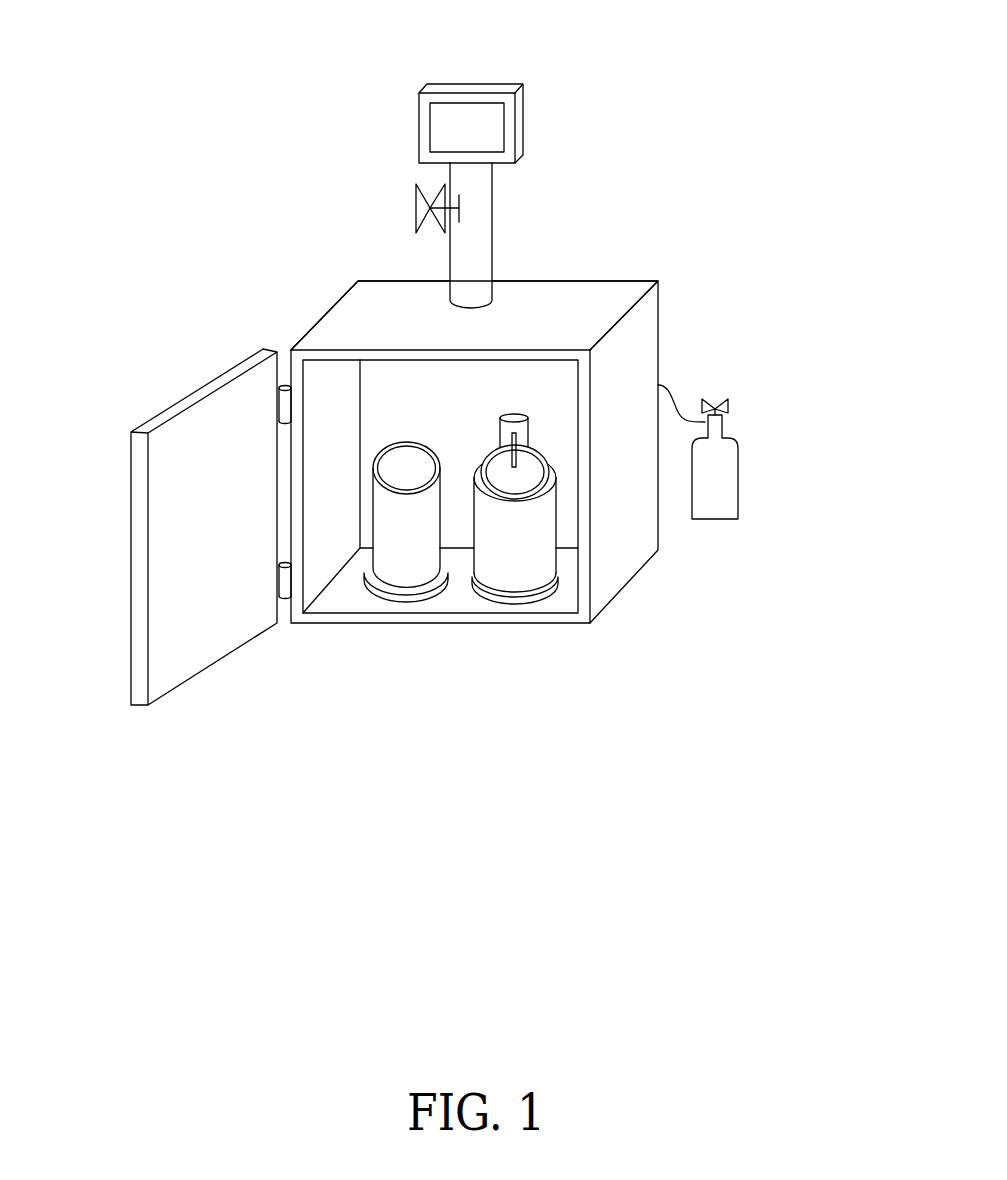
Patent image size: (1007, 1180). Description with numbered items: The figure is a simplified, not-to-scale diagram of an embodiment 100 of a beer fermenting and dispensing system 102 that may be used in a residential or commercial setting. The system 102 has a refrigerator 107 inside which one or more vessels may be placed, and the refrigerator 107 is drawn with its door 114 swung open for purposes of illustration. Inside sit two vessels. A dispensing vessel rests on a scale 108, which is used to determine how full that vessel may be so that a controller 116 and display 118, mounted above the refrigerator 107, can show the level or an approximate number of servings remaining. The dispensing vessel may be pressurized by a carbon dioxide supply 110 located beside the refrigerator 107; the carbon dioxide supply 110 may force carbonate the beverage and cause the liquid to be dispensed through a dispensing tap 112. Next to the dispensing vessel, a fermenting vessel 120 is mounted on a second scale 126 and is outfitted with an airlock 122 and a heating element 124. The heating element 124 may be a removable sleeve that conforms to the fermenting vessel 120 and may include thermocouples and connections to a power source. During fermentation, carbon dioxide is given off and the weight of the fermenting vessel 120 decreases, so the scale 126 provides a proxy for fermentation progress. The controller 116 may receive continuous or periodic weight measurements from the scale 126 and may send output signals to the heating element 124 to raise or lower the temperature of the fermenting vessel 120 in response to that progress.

The embodiment 100 is at (423, 552).
The fermenting and dispensing system 102 is at (583, 300).
The refrigerator 107 is at (566, 452).
The scale 108 is at (393, 600).
The carbon dioxide supply 110 is at (725, 457).
The dispensing tap 112 is at (420, 227).
The door 114 is at (180, 398).
The controller 116 is at (487, 128).
The display 118 is at (442, 130).
The fermenting vessel 120 is at (547, 532).
The airlock 122 is at (528, 428).
The heating element 124 is at (525, 560).
The scale 126 is at (505, 600).